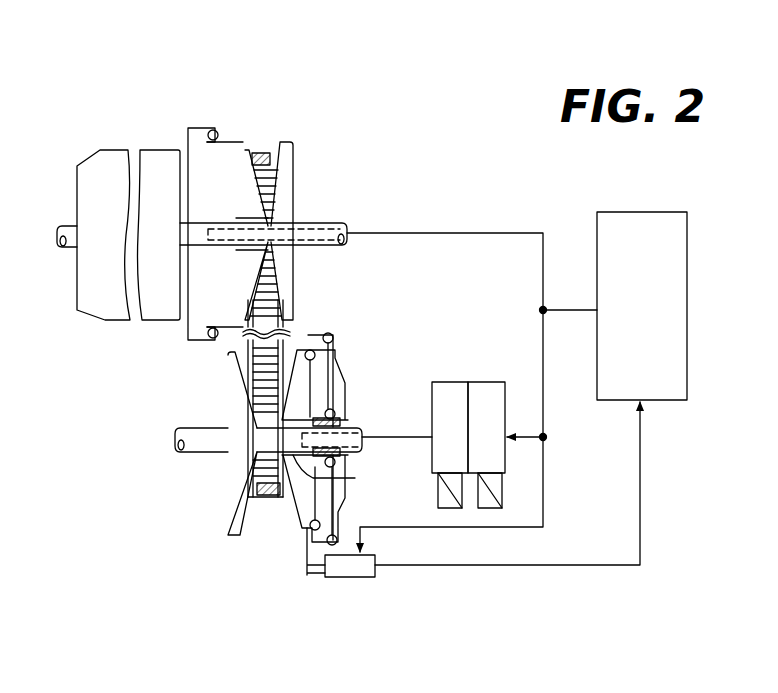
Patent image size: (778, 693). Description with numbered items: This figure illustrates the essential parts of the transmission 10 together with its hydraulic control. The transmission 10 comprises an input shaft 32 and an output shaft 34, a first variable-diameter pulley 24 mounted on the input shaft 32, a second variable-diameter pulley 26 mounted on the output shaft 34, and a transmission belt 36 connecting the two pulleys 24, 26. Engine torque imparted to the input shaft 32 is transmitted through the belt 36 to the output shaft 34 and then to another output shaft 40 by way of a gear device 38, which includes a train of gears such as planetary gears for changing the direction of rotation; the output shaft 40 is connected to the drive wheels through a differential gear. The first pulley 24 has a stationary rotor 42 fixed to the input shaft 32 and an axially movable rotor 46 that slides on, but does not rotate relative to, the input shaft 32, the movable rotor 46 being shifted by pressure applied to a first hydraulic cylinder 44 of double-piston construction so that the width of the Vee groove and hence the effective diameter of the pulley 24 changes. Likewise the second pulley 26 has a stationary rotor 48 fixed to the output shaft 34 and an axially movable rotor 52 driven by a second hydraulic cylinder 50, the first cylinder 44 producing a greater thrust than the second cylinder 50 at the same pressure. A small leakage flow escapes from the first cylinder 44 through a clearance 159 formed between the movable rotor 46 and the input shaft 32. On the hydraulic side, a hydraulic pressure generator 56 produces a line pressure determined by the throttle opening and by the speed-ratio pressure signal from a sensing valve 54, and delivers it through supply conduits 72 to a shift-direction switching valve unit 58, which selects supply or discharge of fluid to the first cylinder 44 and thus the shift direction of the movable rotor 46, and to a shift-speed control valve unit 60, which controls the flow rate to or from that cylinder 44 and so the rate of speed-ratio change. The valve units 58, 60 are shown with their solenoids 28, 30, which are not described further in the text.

The transmission 10 is at (156, 88).
The first variable-diameter pulley 24 is at (223, 533).
The second variable-diameter pulley 26 is at (298, 129).
The solenoid 28 is at (497, 487).
The solenoid 30 is at (445, 500).
The input shaft 32 is at (189, 432).
The output shaft 34 is at (331, 223).
The transmission belt 36 is at (290, 345).
The gear device 38 is at (112, 162).
The output shaft 40 is at (72, 233).
The stationary rotor 42 is at (237, 472).
The first hydraulic cylinder 44 is at (350, 391).
The axially movable rotor 46 is at (292, 512).
The stationary rotor 48 is at (288, 190).
The second hydraulic cylinder 50 is at (207, 177).
The axially movable rotor 52 is at (243, 147).
The sensing valve 54 is at (362, 577).
The hydraulic pressure generator 56 is at (658, 223).
The shift-direction switching valve unit 58 is at (488, 380).
The shift-speed control valve unit 60 is at (449, 380).
The supply conduits 72 is at (472, 232).
The clearance 159 is at (344, 475).